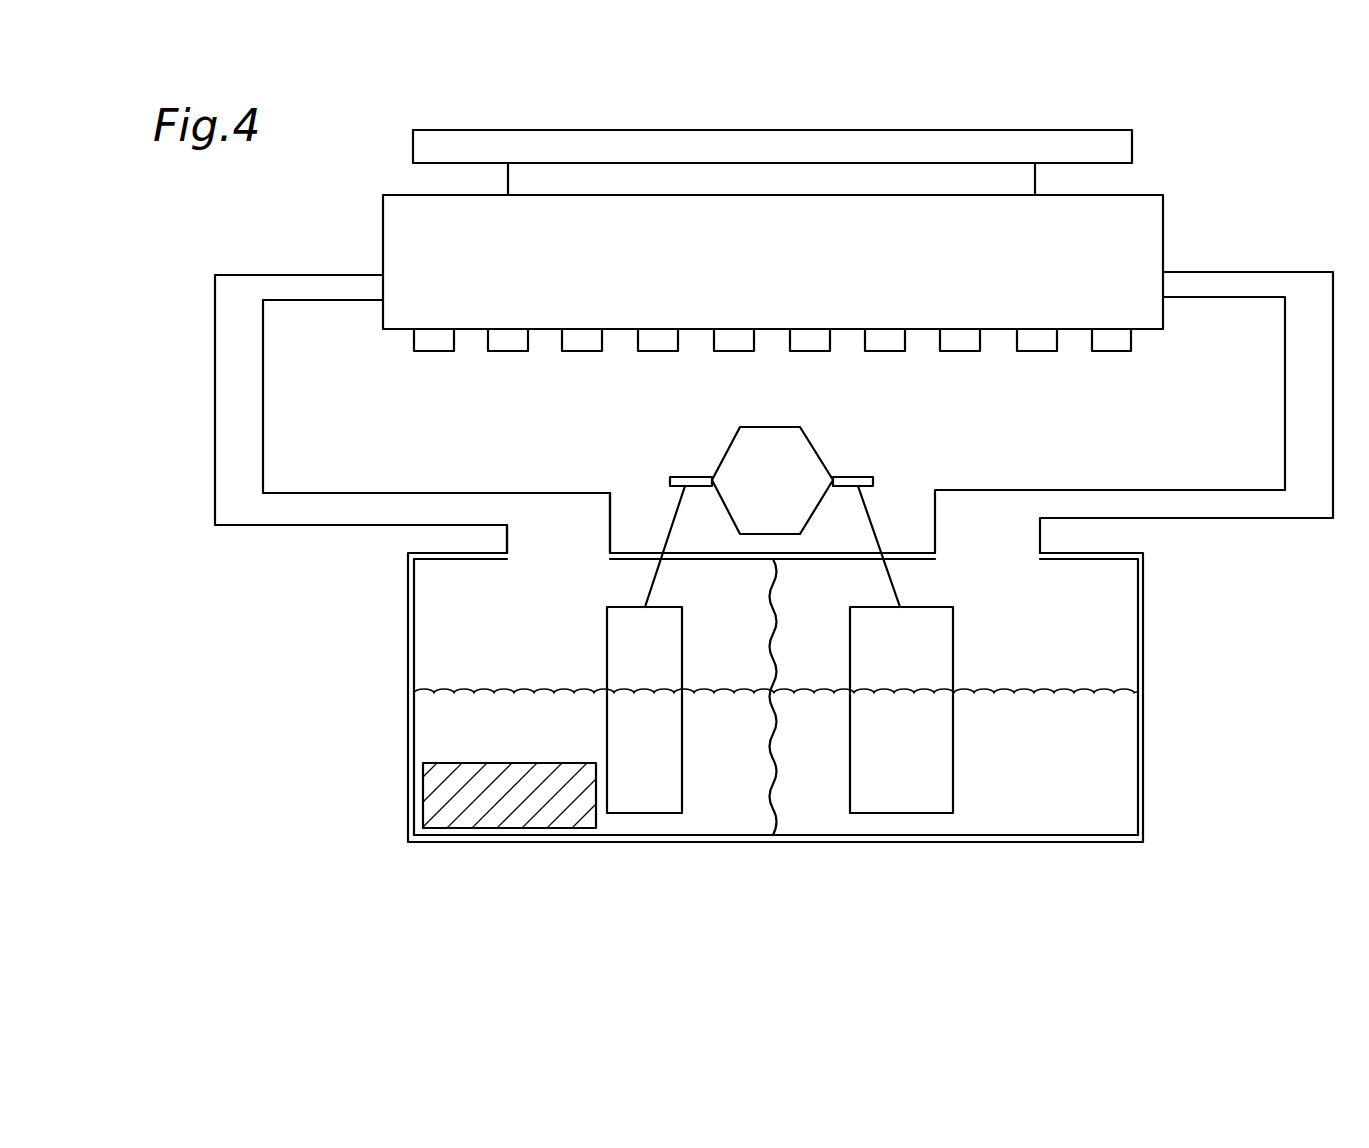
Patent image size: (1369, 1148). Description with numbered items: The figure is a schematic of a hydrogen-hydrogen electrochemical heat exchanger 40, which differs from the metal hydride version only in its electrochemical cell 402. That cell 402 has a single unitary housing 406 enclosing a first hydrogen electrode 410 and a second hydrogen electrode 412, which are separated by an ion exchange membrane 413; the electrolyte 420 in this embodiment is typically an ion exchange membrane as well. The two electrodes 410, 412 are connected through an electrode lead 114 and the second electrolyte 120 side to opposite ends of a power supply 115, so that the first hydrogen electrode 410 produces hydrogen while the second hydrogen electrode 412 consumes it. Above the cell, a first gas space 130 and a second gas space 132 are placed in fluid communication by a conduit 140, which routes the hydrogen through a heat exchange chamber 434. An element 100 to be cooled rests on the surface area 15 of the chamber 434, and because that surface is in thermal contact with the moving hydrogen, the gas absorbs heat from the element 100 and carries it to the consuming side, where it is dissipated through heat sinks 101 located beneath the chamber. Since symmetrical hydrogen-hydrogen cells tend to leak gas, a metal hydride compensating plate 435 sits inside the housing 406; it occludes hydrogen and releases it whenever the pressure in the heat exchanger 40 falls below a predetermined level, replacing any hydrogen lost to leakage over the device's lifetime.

The electrochemical heat exchanger 40 is at (324, 250).
The element to be cooled 100 is at (752, 130).
The surface area 15 is at (1006, 176).
The heat exchange chamber 434 is at (790, 291).
The heat sink 101 is at (1040, 337).
The conduit 140 is at (214, 408).
The first gas space 130 is at (560, 527).
The second gas space 132 is at (983, 540).
The power supply 115 is at (792, 494).
The electrode lead 114 is at (672, 519).
The second electrolyte 120 is at (877, 528).
The single unitary housing 406 is at (1143, 768).
The electrolyte 420 is at (427, 645).
The metal hydride compensating plate 435 is at (445, 792).
The first hydrogen electrode 410 is at (642, 794).
The second hydrogen electrode 412 is at (894, 787).
The ion exchange membrane 413 is at (770, 797).
The electrochemical cell 402 is at (804, 852).